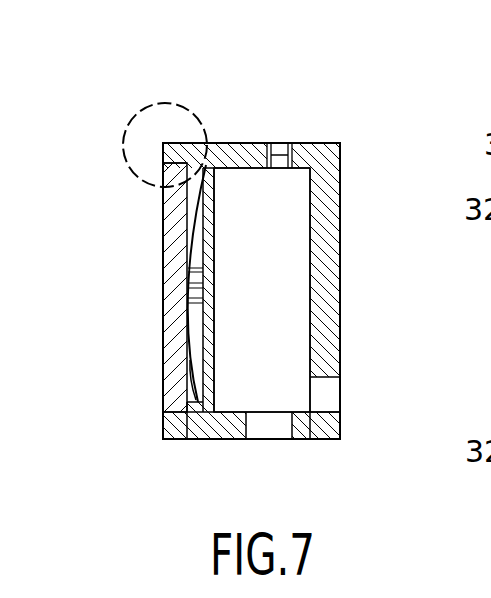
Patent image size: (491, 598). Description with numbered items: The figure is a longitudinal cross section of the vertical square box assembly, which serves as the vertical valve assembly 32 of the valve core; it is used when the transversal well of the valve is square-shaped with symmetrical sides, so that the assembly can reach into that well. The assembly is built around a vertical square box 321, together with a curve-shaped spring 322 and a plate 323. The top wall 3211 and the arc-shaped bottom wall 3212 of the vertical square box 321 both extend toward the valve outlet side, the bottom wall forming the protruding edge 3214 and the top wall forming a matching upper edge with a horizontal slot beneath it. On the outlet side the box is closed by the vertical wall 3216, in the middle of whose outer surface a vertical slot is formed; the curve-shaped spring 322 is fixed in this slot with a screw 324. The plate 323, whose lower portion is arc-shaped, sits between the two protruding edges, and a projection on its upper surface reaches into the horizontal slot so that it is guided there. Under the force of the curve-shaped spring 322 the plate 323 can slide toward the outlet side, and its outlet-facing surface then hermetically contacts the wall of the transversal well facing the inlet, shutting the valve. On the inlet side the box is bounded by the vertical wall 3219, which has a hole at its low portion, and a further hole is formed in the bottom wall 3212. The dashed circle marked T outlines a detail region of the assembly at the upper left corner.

The vertical valve assembly 32 is at (322, 129).
The vertical square box 321 is at (272, 298).
The top wall 3211 is at (239, 144).
The arc-shaped bottom wall 3212 is at (208, 432).
The protruding edge 3214 is at (170, 433).
The vertical wall 3216 is at (207, 342).
The vertical wall 3219 is at (343, 155).
The curve-shaped spring 322 is at (195, 385).
The plate 323 is at (177, 242).
The screw 324 is at (188, 282).
The detail region T is at (125, 131).